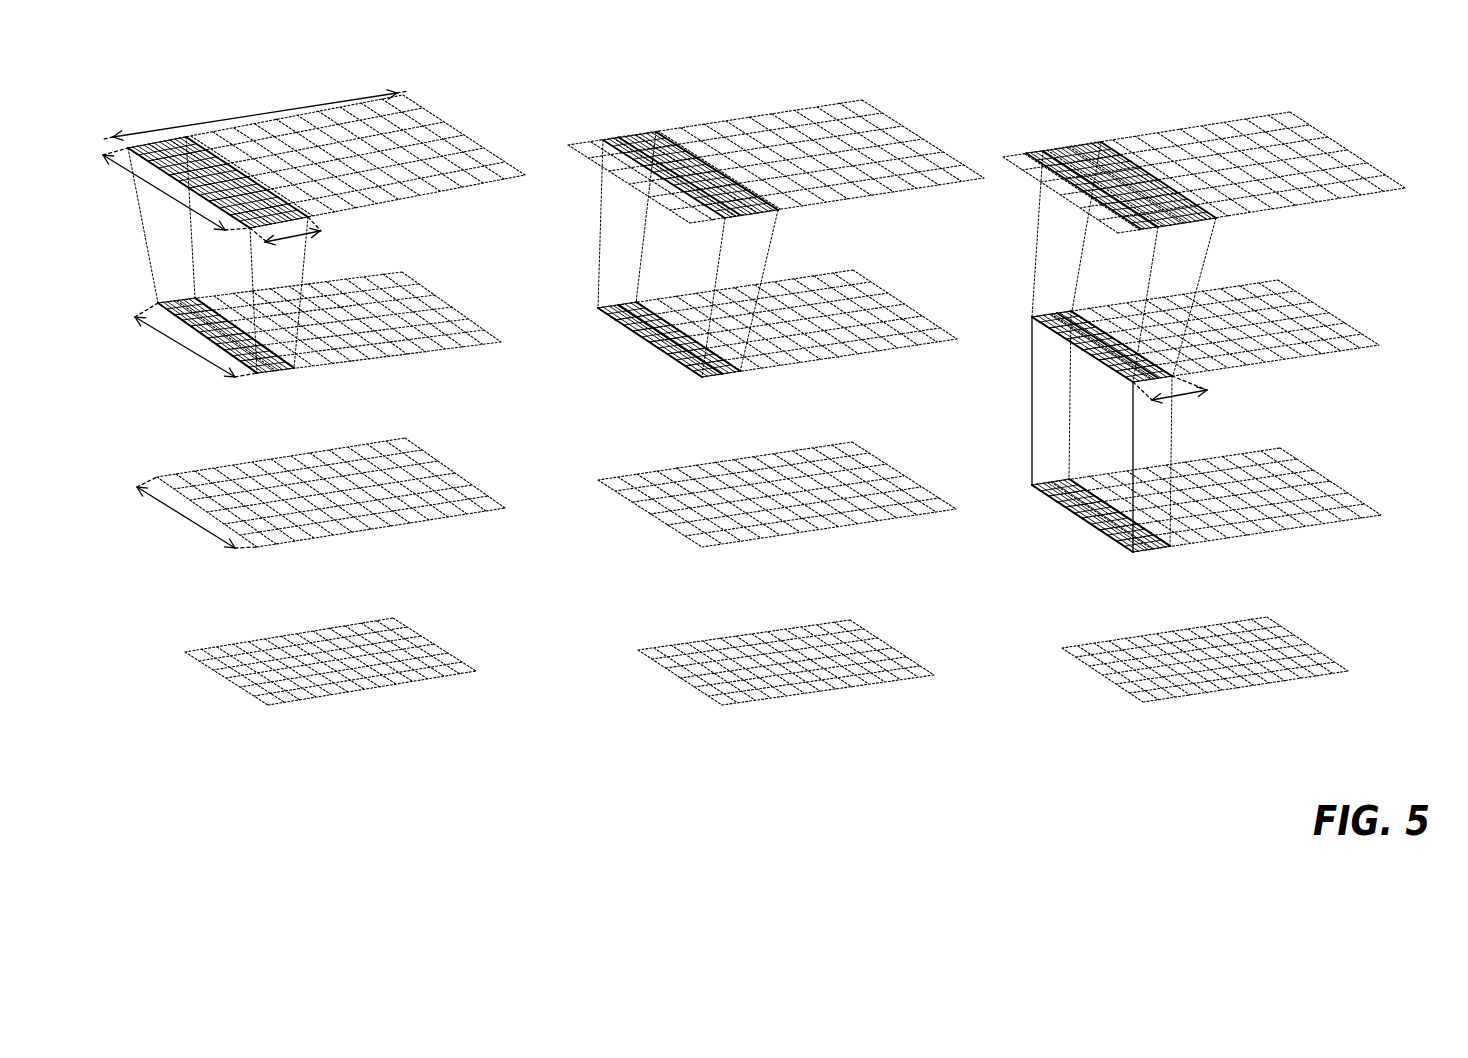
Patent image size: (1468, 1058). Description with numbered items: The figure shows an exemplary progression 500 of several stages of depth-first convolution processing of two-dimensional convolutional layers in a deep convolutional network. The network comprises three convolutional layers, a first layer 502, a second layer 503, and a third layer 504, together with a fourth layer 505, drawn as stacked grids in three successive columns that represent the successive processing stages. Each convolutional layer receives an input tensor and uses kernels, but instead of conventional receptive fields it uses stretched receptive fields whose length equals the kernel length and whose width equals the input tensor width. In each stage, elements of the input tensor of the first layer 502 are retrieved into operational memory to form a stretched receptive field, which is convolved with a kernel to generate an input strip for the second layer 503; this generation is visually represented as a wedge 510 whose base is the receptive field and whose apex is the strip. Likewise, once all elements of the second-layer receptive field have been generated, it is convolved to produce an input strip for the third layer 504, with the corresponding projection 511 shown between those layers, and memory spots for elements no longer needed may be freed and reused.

The progression 500 is at (1390, 788).
The first convolutional layer 502 is at (488, 101).
The second convolutional layer 503 is at (478, 290).
The third convolutional layer 504 is at (478, 473).
The fourth layer 505 is at (478, 640).
The wedge 510 is at (267, 273).
The projection volume 511 is at (1150, 458).